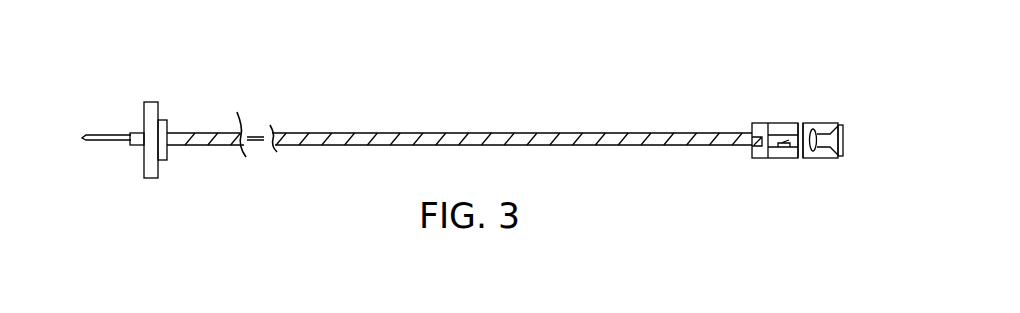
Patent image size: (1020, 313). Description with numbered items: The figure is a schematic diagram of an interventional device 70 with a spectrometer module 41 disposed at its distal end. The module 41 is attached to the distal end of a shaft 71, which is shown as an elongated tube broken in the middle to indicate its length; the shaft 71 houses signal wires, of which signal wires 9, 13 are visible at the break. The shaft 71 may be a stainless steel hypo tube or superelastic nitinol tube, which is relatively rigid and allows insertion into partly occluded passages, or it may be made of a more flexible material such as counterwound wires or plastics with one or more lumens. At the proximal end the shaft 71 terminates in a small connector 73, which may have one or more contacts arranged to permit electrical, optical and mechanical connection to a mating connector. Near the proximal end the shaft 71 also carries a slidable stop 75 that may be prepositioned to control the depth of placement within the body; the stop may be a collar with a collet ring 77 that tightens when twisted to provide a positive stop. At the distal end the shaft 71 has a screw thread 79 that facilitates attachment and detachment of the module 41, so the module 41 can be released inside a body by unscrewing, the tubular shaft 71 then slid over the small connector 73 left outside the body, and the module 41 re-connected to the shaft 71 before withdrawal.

The interventional device 70 is at (618, 69).
The shaft 71 is at (648, 133).
The small connector 73 is at (100, 134).
The slidable stop 75 is at (167, 159).
The collet ring 77 is at (149, 101).
The screw thread 79 is at (753, 153).
The spectrometer module 41 is at (822, 126).
The signal wire 9 is at (251, 134).
The signal wire 13 is at (263, 149).